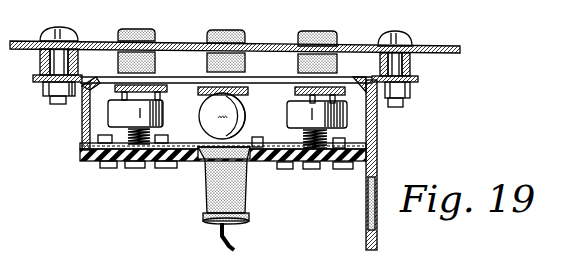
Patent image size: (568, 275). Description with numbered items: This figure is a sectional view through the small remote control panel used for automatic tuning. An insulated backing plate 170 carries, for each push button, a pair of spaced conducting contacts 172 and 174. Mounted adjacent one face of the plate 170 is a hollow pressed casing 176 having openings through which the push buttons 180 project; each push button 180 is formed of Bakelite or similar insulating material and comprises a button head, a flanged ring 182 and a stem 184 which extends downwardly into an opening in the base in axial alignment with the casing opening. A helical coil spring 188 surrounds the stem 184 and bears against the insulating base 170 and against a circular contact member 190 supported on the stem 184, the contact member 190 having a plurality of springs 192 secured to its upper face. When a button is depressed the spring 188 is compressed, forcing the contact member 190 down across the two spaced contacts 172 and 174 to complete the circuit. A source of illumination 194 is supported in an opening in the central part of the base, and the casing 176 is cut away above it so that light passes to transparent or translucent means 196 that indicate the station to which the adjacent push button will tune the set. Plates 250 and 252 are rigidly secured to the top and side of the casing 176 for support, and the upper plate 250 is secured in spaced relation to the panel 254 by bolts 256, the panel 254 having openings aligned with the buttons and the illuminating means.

The insulated backing plate 170 is at (85, 160).
The conducting contact 172 is at (162, 137).
The conducting contact 174 is at (83, 144).
The hollow pressed casing 176 is at (110, 73).
The push button 180 is at (148, 33).
The flanged ring 182 is at (243, 92).
The stem 184 is at (365, 127).
The helical coil spring 188 is at (377, 122).
The circular contact member 190 is at (113, 109).
The spring 192 is at (172, 62).
The source of illumination 194 is at (222, 197).
The transparent or translucent means 196 is at (274, 46).
The upper plate 250 is at (38, 81).
The side plate 252 is at (378, 143).
The panel 254 is at (452, 45).
The bolt 256 is at (40, 66).